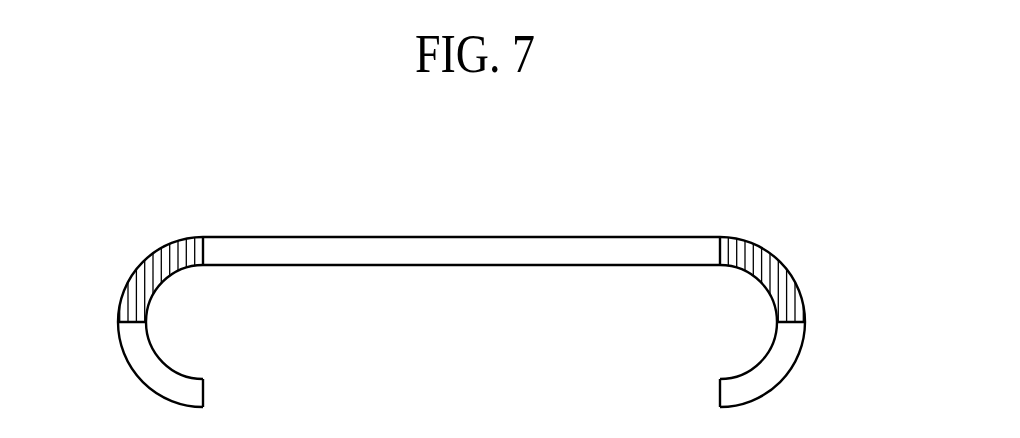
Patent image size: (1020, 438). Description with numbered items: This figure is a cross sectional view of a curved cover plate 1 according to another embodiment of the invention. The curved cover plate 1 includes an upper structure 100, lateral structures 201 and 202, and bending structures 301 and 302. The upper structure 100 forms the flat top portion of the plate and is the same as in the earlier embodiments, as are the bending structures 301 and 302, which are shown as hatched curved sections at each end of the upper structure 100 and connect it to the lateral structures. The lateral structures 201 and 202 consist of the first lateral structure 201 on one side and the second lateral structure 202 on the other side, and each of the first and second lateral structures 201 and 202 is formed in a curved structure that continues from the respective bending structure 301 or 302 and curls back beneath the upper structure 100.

The curved cover plate 1 is at (774, 193).
The upper structure 100 is at (458, 248).
The first lateral structure 201 is at (777, 378).
The second lateral structure 202 is at (147, 377).
The bending structure 301 is at (777, 262).
The bending structure 302 is at (147, 262).